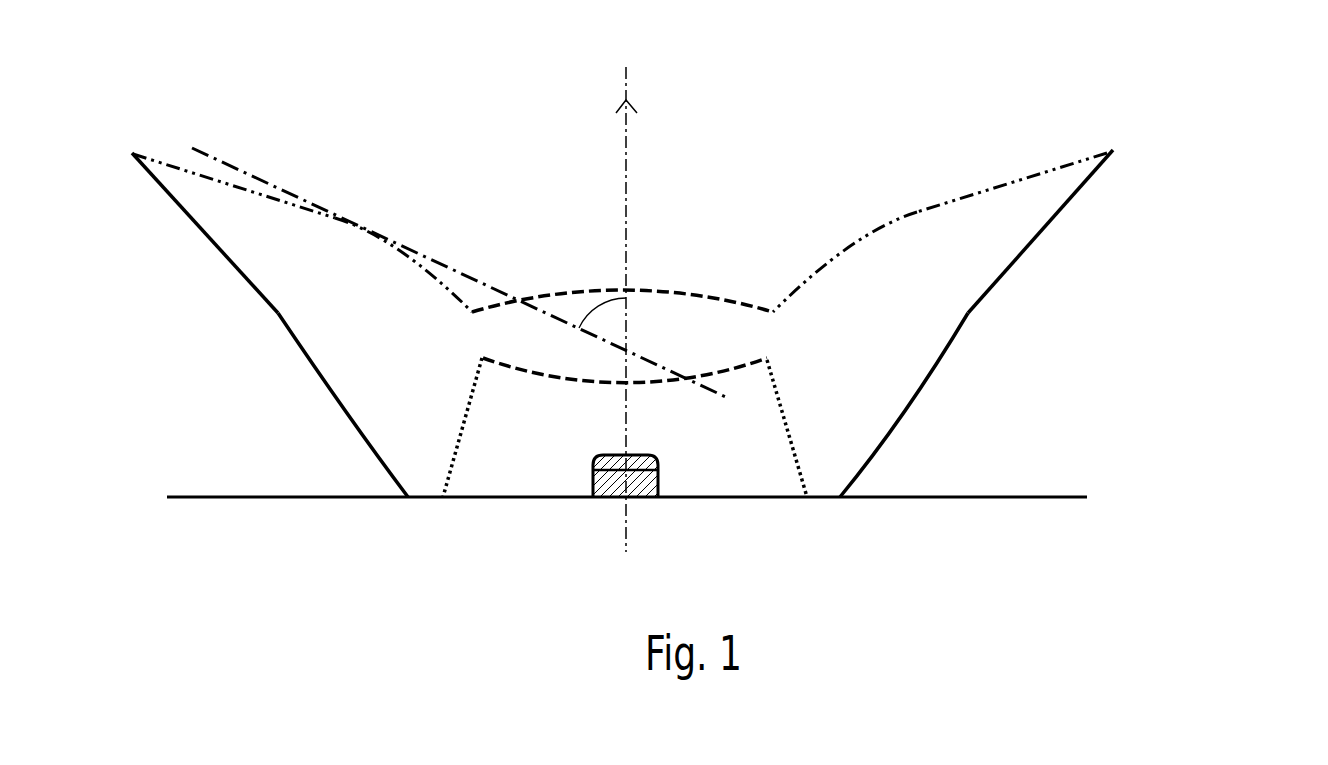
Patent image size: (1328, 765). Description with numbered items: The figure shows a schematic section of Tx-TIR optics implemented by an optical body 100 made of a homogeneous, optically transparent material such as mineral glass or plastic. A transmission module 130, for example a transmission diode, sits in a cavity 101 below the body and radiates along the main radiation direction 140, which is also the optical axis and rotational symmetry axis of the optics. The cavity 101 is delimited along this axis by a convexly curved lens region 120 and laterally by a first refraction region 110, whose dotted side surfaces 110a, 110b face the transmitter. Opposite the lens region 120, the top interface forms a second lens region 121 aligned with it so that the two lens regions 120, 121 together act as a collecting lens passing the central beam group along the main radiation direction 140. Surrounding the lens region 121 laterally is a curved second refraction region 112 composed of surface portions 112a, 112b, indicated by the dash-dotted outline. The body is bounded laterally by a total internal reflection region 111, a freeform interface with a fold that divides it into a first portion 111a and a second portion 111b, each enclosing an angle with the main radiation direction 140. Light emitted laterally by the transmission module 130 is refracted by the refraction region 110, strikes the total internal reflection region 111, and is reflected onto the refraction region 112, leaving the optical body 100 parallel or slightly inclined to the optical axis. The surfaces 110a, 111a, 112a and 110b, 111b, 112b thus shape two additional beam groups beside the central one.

The optical body 100 is at (156, 125).
The cavity 101 is at (740, 483).
The first refraction region 110 is at (762, 339).
The first refraction region surface portion 110a is at (770, 380).
The first refraction region surface portion 110b is at (787, 450).
The total internal reflection region 111 is at (689, 323).
The total internal reflection region surface portion 111a is at (656, 231).
The total internal reflection region surface portion 111b is at (950, 343).
The second refraction region 112 is at (719, 176).
The second refraction region surface portion 112a is at (980, 193).
The second refraction region surface portion 112b is at (1092, 154).
The lens region 120 is at (512, 368).
The lens region 121 is at (592, 290).
The transmission module 130 is at (607, 488).
The main radiation direction 140 is at (627, 537).